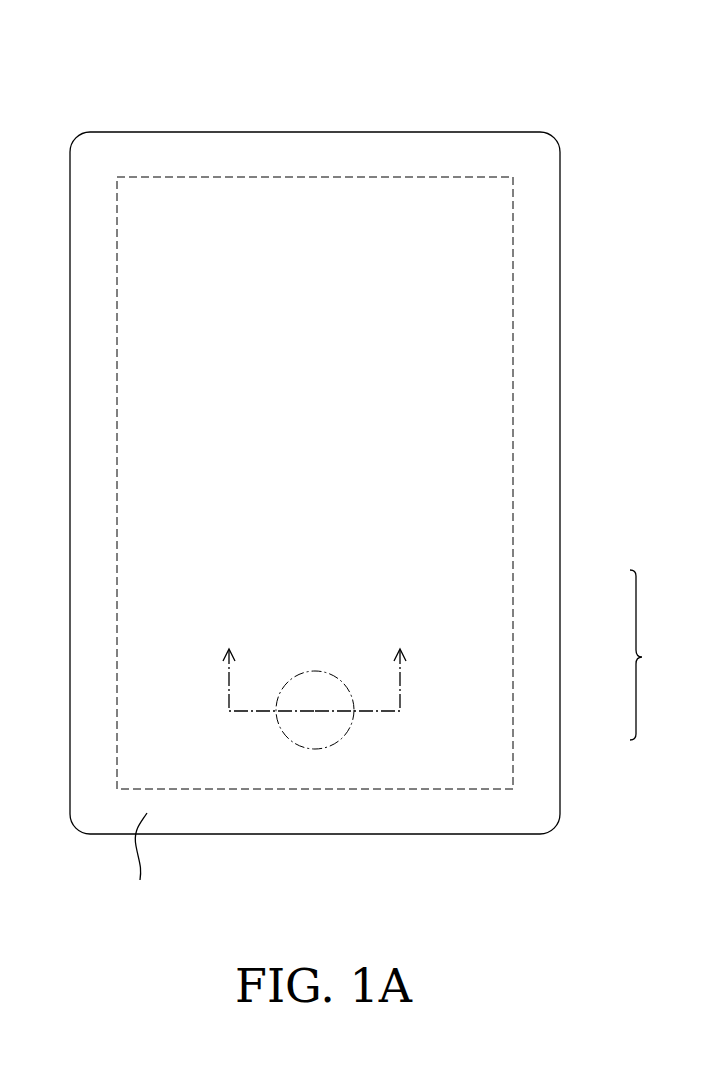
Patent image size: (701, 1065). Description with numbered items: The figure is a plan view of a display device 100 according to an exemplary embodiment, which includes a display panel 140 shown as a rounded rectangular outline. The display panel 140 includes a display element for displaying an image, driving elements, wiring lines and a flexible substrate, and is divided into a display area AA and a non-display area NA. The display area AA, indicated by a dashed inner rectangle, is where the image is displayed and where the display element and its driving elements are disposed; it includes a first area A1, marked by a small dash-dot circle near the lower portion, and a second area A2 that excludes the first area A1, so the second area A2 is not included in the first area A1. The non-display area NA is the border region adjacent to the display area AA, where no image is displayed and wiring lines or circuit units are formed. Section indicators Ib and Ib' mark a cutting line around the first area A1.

The display device 100 is at (558, 42).
The display panel 140 is at (560, 183).
The non-display area NA is at (135, 862).
The second area A2 is at (470, 562).
The first area A1 is at (325, 726).
The display area AA is at (651, 655).
The section line Ib is at (267, 670).
The section line Ib' is at (361, 670).